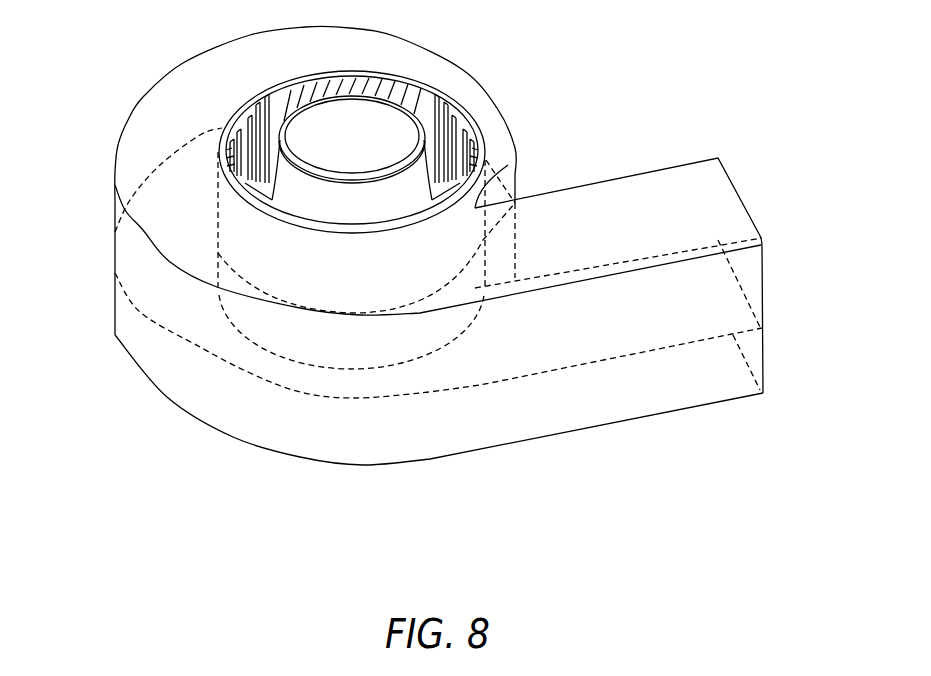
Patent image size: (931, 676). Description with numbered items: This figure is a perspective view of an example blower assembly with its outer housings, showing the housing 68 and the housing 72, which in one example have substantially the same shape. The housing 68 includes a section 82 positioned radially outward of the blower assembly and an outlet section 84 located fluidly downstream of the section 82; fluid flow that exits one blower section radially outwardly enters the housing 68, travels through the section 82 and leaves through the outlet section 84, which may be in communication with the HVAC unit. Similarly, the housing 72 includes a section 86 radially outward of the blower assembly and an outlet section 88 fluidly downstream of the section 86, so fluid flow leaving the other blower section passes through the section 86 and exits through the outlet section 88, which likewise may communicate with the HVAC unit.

The housing 68 is at (123, 112).
The housing 72 is at (160, 401).
The section 82 is at (182, 222).
The outlet section 84 is at (772, 240).
The section 86 is at (167, 348).
The outlet section 88 is at (772, 362).